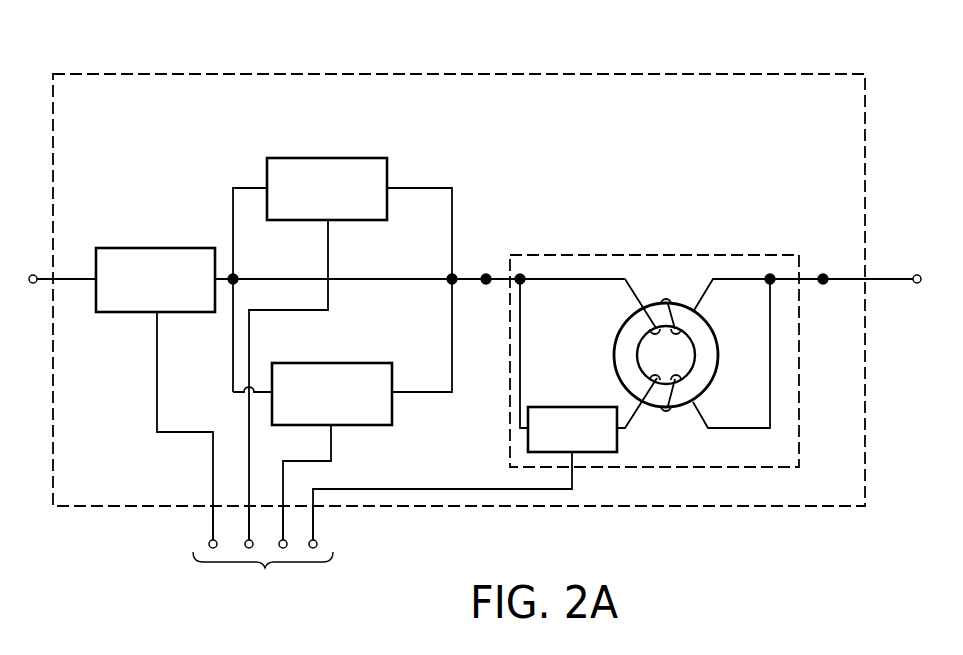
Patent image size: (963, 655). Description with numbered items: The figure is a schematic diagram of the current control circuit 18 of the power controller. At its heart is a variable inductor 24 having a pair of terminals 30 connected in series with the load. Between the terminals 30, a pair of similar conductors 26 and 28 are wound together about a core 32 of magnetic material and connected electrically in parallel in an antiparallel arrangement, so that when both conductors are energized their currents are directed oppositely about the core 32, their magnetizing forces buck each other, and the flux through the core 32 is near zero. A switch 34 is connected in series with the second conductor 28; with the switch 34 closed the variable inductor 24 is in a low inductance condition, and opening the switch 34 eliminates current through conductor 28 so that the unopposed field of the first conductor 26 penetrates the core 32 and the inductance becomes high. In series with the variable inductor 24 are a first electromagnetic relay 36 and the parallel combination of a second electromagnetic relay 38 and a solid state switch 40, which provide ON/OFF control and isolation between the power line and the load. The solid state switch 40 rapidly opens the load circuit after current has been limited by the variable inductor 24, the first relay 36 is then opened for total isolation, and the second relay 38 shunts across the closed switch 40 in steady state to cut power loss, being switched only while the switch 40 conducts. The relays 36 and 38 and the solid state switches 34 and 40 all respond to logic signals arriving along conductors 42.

The current control circuit 18 is at (677, 74).
The variable inductor 24 is at (622, 255).
The conductor 26 is at (667, 300).
The conductor 28 is at (667, 411).
The terminals 30 is at (487, 272).
The core 32 is at (718, 366).
The switch 34 is at (569, 407).
The first electromagnetic relay 36 is at (161, 248).
The second electromagnetic relay 38 is at (318, 158).
The solid state switch 40 is at (328, 363).
The conductors 42 is at (263, 554).